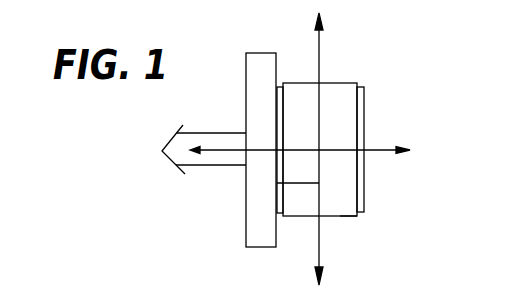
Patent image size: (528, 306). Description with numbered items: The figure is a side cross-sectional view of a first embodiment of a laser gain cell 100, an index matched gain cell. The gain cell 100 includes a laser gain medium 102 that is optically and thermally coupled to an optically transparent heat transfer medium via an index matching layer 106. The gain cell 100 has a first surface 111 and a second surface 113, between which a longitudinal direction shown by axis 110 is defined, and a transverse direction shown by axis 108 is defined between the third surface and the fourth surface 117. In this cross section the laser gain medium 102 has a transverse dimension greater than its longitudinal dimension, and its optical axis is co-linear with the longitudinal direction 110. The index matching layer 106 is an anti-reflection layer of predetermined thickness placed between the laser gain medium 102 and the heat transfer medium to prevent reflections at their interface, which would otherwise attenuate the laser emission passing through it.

The laser gain cell 100 is at (458, 31).
The laser gain medium 102 is at (338, 83).
The index matching layer 106 is at (282, 213).
The transverse axis 108 is at (317, 42).
The longitudinal axis 110 is at (378, 147).
The first surface 111 is at (277, 184).
The second surface 113 is at (365, 192).
The fourth surface 117 is at (353, 216).